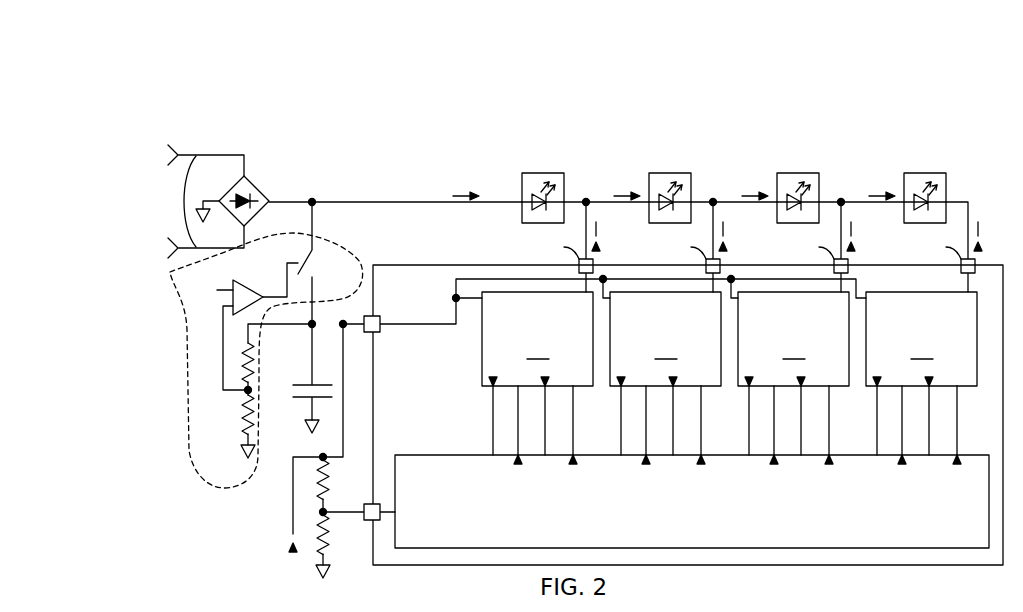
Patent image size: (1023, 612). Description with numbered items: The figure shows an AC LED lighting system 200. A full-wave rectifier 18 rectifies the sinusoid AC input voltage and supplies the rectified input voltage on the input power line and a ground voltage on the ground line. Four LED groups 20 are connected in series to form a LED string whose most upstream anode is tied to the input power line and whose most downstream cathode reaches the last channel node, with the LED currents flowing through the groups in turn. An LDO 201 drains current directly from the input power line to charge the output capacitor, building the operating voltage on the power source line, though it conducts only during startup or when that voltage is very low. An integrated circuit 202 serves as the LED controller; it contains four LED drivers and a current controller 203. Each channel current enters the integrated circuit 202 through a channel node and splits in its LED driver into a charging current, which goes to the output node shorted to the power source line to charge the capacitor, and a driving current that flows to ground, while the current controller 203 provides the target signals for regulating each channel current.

The AC LED lighting system 200 is at (398, 134).
The full-wave rectifier 18 is at (254, 180).
The LED groups 20 is at (540, 173).
The LDO 201 is at (355, 255).
The integrated circuit 202 is at (406, 298).
The current controller 203 is at (773, 519).